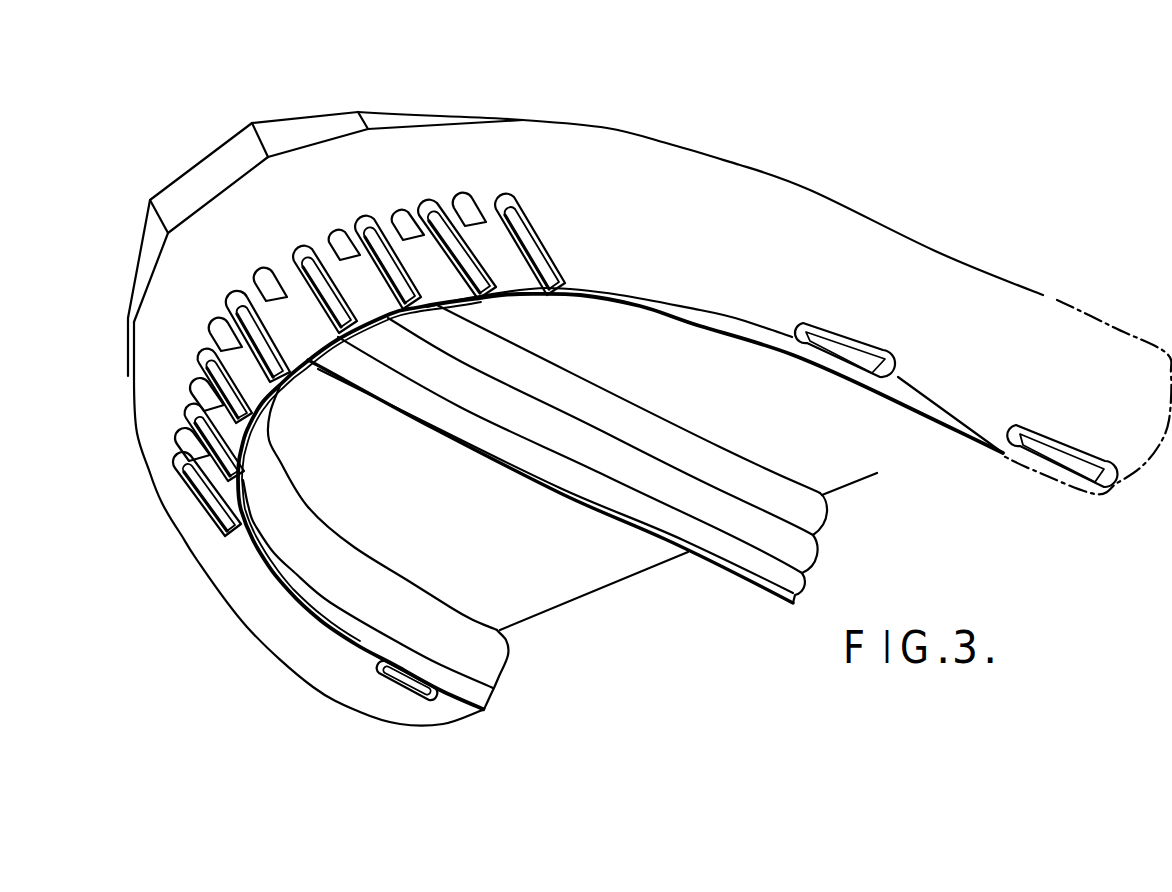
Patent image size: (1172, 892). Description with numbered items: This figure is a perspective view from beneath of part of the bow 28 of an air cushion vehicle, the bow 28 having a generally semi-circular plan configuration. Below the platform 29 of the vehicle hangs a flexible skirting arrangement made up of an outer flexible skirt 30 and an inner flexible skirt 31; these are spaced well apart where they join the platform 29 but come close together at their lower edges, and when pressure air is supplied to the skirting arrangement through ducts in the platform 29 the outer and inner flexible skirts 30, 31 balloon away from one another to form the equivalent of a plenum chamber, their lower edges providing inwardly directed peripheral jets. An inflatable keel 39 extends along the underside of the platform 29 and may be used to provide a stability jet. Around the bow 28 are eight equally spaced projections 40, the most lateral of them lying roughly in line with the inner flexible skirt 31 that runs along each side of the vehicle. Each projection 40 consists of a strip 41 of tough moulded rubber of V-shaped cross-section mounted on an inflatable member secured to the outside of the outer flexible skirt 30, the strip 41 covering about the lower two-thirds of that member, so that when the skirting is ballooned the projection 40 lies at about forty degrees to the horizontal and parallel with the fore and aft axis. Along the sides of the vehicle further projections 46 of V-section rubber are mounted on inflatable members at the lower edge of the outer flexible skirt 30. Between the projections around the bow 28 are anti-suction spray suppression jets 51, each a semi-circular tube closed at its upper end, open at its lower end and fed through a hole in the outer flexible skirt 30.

The bow 28 is at (263, 612).
The platform 29 is at (494, 539).
The outer flexible skirt 30 is at (150, 410).
The inner flexible skirt 31 is at (487, 647).
The inflatable keel 39 is at (455, 412).
The projections 40 is at (541, 242).
The strip 41 is at (541, 272).
The projections 46 is at (1047, 453).
The anti-suction spray suppression jets 51 is at (405, 213).